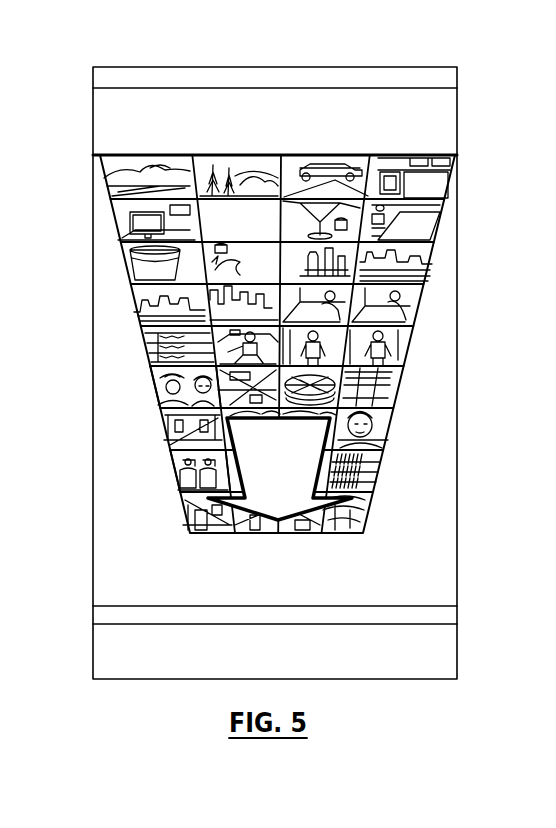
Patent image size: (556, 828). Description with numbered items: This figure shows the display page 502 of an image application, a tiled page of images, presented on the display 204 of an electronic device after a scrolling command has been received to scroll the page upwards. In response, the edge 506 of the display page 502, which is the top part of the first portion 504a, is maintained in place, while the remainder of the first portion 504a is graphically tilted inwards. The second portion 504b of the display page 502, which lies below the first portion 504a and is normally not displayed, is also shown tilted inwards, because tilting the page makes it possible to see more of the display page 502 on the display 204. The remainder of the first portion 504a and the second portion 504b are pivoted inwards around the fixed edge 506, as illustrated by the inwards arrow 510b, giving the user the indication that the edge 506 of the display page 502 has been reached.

The display 204 is at (92, 107).
The display page 502 is at (100, 157).
The edge 506 is at (140, 157).
The first portion 504a is at (197, 362).
The second portion 504b is at (190, 443).
The inwards arrow 510b is at (303, 462).